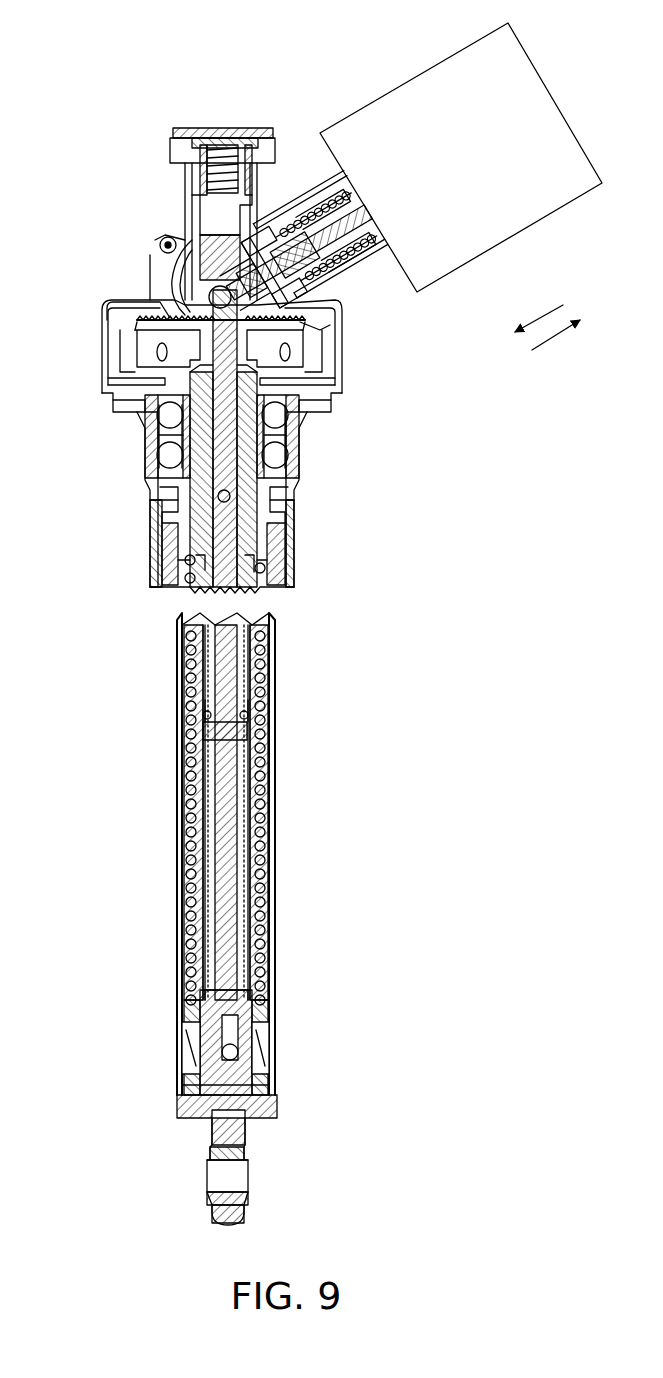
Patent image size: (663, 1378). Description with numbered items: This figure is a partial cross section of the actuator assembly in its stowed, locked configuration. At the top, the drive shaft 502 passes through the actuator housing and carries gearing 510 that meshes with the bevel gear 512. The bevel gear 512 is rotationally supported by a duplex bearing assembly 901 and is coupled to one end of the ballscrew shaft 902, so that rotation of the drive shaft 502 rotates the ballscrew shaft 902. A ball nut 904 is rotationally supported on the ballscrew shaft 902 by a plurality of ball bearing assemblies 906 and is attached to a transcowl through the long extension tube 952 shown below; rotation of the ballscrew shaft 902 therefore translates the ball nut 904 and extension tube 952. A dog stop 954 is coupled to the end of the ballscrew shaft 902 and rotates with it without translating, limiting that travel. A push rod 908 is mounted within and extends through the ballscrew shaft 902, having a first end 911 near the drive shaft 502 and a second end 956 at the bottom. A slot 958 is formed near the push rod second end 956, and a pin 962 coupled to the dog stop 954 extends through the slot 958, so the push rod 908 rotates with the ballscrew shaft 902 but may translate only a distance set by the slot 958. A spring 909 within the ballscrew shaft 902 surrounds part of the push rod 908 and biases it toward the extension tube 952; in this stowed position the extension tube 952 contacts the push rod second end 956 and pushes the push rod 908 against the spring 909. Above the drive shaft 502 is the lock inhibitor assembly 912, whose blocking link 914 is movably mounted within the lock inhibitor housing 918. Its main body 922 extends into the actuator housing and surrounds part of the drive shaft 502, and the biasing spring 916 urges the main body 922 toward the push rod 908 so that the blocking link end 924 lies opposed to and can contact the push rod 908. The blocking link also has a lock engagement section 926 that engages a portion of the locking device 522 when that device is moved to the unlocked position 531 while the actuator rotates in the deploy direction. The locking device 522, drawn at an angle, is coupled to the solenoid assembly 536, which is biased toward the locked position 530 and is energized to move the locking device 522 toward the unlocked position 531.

The lock inhibitor assembly 912 is at (142, 113).
The locking device 522 is at (308, 128).
The lock inhibitor housing 918 is at (192, 158).
The blocking link 914 is at (197, 210).
The lock engagement section 926 is at (200, 240).
The gearing 510 is at (173, 276).
The drive shaft 502 is at (200, 293).
The push rod first end 911 is at (153, 313).
The blocking link end 924 is at (133, 322).
The biasing spring 916 is at (258, 170).
The blocking link main body 922 is at (204, 228).
The bevel gear 512 is at (330, 325).
The first (locked) position 530 is at (547, 317).
The second (unlocked) position 531 is at (553, 348).
The solenoid assembly 536 is at (440, 167).
The duplex bearing assembly 901 is at (297, 437).
The ballscrew shaft 902 is at (250, 490).
The push rod 908 is at (190, 513).
The ball nut 904 is at (277, 530).
The spring 909 is at (187, 558).
The ball bearing assemblies 906 is at (257, 568).
The extension tube 952 is at (275, 848).
The slot 958 is at (225, 1023).
The pin 962 is at (207, 1052).
The dog stop 954 is at (268, 1047).
The push rod second end 956 is at (233, 1112).